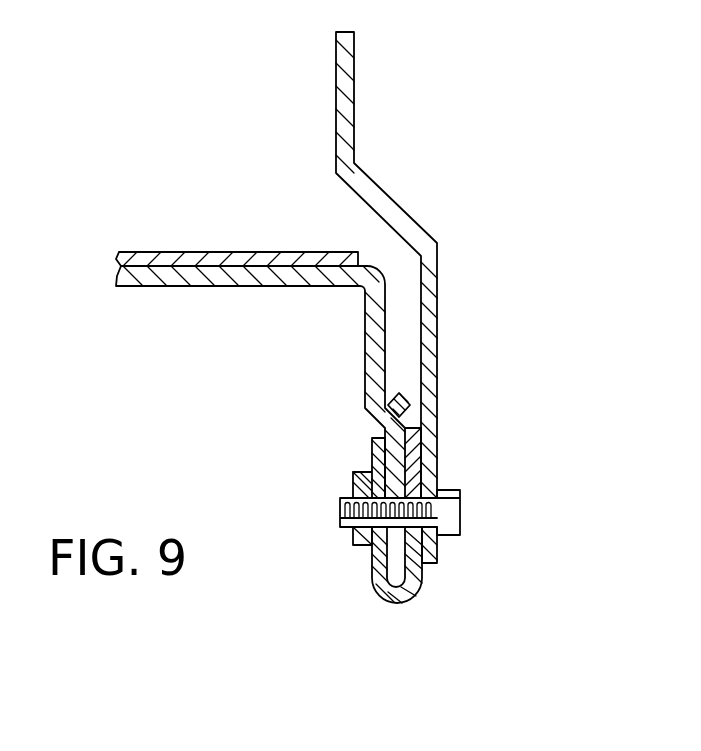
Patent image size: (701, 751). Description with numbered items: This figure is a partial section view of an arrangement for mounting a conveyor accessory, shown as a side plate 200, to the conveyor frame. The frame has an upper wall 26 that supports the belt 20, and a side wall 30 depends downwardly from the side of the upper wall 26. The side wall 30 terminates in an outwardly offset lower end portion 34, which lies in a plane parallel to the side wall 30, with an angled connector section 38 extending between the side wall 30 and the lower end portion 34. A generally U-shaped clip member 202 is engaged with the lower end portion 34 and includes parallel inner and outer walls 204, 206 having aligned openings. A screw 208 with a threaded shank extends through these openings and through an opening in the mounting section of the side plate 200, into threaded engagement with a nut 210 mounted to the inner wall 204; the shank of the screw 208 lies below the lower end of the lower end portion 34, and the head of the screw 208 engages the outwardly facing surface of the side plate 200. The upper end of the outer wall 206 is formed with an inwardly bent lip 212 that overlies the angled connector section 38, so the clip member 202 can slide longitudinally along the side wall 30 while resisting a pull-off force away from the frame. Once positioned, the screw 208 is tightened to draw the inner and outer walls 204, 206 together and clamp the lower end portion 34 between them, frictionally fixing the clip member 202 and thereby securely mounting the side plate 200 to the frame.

The belt 20 is at (205, 238).
The upper wall 26 is at (208, 286).
The side wall 30 is at (327, 382).
The lower end portion 34 is at (400, 463).
The angled connector section 38 is at (392, 420).
The side plate 200 is at (462, 242).
The clip member 202 is at (428, 575).
The inner wall 204 is at (371, 560).
The outer wall 206 is at (423, 565).
The screw 208 is at (458, 492).
The nut 210 is at (353, 473).
The lip 212 is at (405, 400).